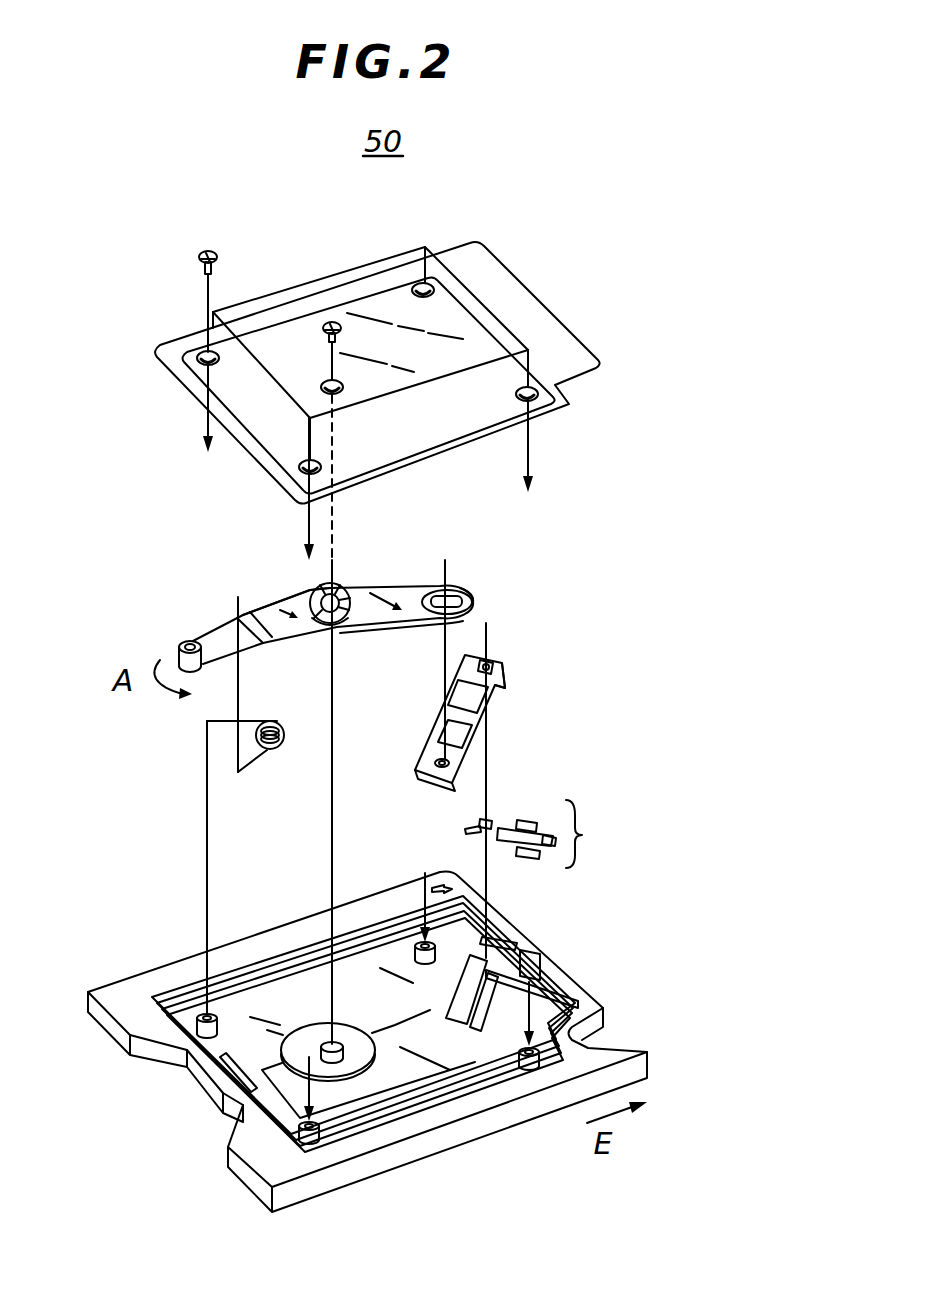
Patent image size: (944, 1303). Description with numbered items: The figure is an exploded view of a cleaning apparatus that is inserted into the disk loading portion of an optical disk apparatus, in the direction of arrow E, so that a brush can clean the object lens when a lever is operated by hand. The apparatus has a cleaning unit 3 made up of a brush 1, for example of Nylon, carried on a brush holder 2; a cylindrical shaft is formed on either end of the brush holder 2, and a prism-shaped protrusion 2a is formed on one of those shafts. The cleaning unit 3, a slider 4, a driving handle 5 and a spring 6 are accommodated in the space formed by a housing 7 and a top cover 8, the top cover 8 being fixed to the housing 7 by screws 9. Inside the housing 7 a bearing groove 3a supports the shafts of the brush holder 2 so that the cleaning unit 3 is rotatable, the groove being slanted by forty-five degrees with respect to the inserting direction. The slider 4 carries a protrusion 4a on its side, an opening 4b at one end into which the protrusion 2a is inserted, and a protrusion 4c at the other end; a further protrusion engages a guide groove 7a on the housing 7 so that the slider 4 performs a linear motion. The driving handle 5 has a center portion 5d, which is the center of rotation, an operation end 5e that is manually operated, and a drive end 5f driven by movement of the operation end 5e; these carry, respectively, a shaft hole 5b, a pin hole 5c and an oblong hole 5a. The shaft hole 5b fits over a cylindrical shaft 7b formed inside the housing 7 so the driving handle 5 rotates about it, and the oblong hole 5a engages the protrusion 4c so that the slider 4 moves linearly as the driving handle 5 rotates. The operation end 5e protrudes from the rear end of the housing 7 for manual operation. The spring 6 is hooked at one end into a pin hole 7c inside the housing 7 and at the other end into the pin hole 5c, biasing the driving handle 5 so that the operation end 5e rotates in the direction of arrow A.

The brush 1 is at (535, 863).
The brush holder 2 is at (515, 822).
The prism-shaped protrusion 2a is at (480, 815).
The cleaning unit 3 is at (515, 822).
The bearing groove 3a is at (497, 970).
The slider 4 is at (482, 675).
The protrusion 4a is at (507, 680).
The opening 4b is at (490, 663).
The protrusion 4c is at (435, 758).
The driving handle 5 is at (306, 591).
The oblong hole 5a is at (458, 592).
The shaft hole 5b is at (343, 593).
The pin hole 5c is at (237, 633).
The center portion 5d is at (290, 574).
The operation end 5e is at (166, 638).
The drive end 5f is at (476, 579).
The spring 6 is at (243, 778).
The housing 7 is at (370, 1042).
The guide groove 7a is at (470, 1024).
The cylindrical shaft 7b is at (353, 1043).
The pin hole 7c is at (203, 1012).
The top cover 8 is at (507, 303).
The screws 9 is at (200, 258).